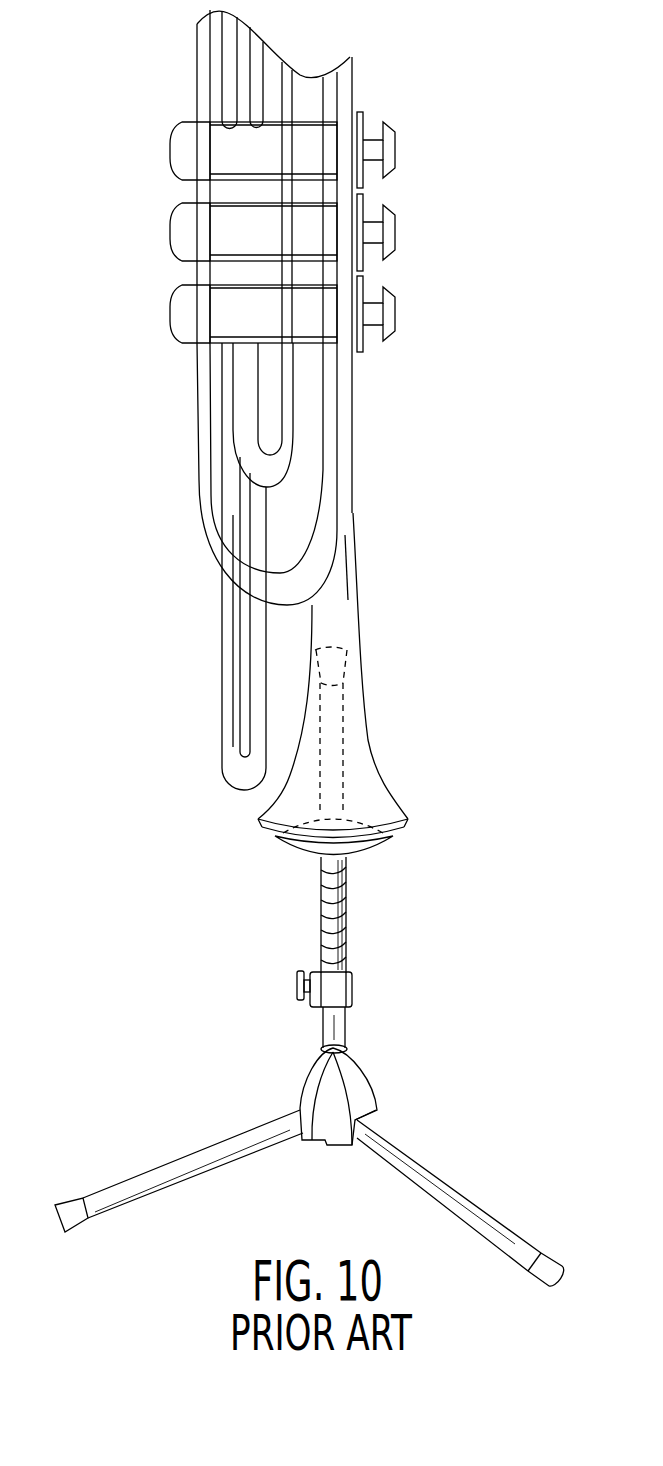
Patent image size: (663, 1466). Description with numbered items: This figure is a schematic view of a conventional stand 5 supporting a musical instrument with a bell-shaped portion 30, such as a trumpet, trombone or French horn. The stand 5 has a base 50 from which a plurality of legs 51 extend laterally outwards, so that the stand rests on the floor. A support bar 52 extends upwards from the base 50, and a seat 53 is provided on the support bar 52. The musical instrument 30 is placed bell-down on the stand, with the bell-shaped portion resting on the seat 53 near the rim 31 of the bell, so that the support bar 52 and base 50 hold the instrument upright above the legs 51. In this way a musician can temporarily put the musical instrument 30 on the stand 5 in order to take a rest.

The musical instrument with a bell-shaped portion 30 is at (357, 425).
The bell rim of trumpet 31 is at (404, 820).
The conventional stand 5 is at (309, 1061).
The base 50 is at (360, 1085).
The legs 51 is at (452, 1195).
The support bar 52 is at (347, 928).
The seat 53 is at (390, 843).